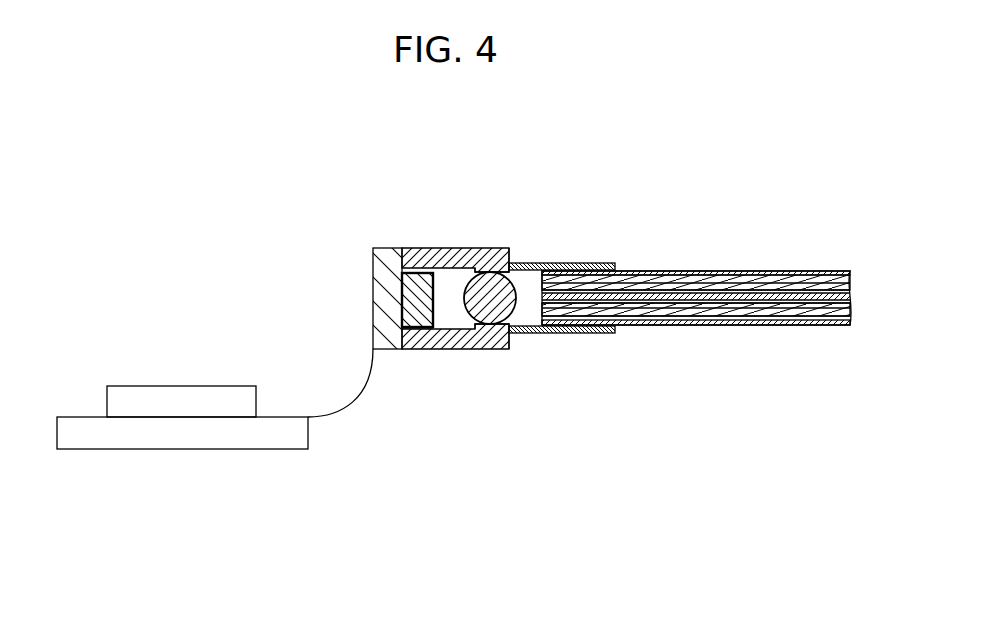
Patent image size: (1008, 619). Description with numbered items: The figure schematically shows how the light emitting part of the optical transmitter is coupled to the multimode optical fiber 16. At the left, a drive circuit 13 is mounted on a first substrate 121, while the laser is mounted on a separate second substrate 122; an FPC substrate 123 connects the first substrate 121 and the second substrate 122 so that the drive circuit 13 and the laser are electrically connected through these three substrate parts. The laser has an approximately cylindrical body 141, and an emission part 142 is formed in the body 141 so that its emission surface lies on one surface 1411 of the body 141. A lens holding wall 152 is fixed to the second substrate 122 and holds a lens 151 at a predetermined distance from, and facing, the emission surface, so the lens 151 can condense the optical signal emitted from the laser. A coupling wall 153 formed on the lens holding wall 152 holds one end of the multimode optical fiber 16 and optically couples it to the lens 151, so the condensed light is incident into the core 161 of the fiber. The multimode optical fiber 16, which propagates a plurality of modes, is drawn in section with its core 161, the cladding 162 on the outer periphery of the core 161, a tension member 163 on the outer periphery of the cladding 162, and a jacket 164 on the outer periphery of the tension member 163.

The drive circuit 13 is at (183, 388).
The first substrate 121 is at (185, 449).
The second substrate 122 is at (380, 303).
The FPC substrate 123 is at (353, 403).
The body 141 is at (419, 262).
The surface of the body 1411 is at (432, 331).
The emission part 142 is at (436, 330).
The lens 151 is at (496, 326).
The lens holding wall 152 is at (494, 247).
The coupling wall 153 is at (556, 334).
The multimode optical fiber 16 is at (707, 296).
The core 161 is at (776, 273).
The cladding 162 is at (708, 280).
The tension member 163 is at (673, 312).
The jacket 164 is at (746, 321).